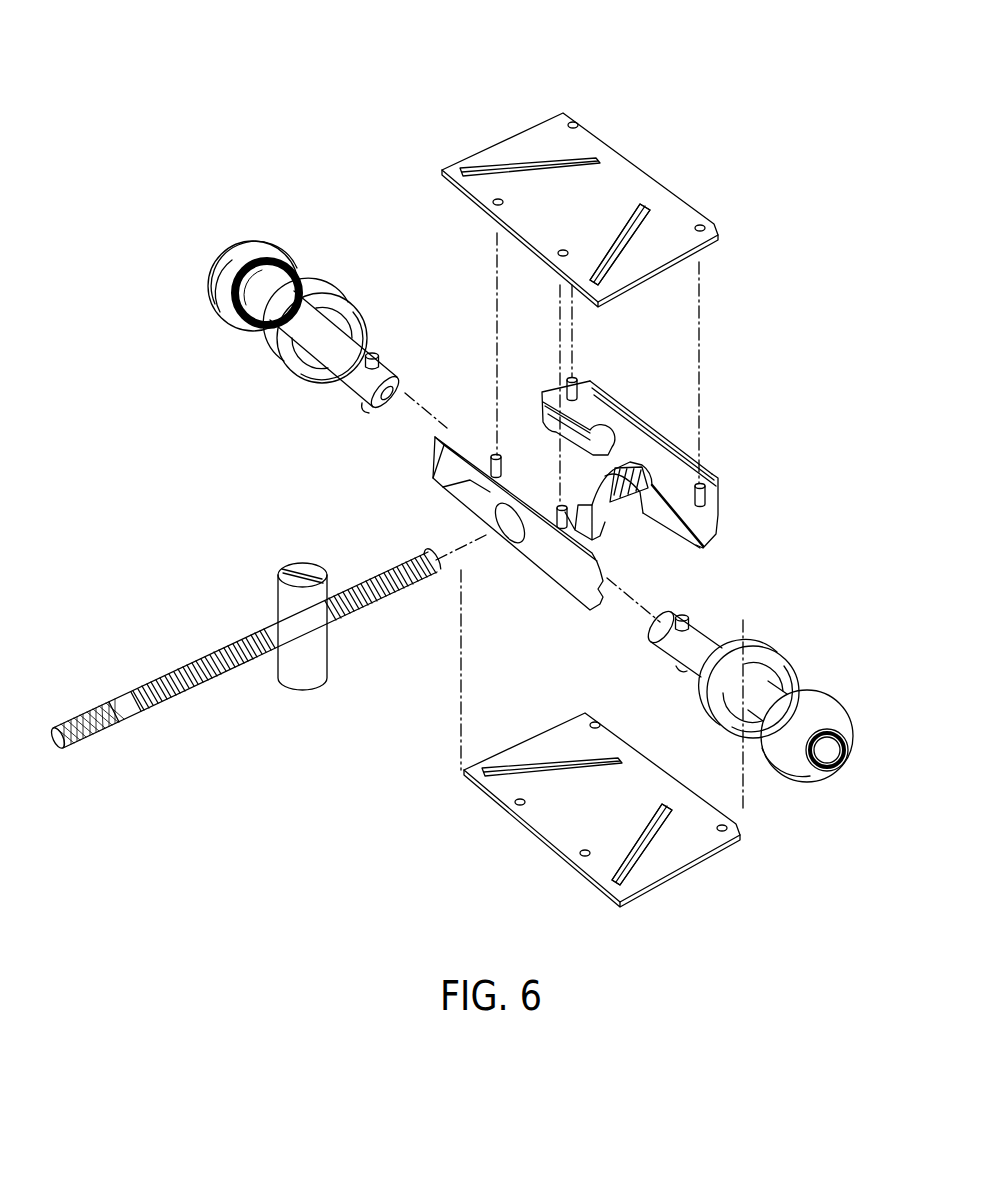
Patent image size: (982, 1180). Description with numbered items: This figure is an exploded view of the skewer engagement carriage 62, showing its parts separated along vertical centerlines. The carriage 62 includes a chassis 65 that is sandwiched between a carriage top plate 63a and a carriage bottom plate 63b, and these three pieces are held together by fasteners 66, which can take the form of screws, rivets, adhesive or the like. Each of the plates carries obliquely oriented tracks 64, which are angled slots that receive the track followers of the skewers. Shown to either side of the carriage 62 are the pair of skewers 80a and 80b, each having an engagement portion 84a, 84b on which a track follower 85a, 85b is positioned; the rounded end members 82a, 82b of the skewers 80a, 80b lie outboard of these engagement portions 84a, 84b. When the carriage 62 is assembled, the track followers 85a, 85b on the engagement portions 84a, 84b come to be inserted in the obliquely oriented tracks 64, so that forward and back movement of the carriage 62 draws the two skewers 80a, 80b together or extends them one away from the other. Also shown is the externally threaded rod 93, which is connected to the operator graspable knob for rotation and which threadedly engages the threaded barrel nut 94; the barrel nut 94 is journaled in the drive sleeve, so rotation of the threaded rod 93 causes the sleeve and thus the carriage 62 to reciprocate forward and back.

The skewer engagement carriage 62 is at (547, 86).
The carriage top plate 63a is at (632, 172).
The carriage bottom plate 63b is at (556, 815).
The obliquely oriented tracks 64 is at (657, 241).
The chassis 65 is at (647, 452).
The fasteners 66 is at (587, 387).
The skewer 80a is at (330, 394).
The skewer 80b is at (742, 614).
The wheel of skewer 82a is at (240, 248).
The wheel of skewer 82b is at (818, 718).
The engagement portion 84a is at (407, 350).
The engagement portion 84b is at (671, 681).
The track follower 85a is at (373, 353).
The track follower 85b is at (690, 615).
The externally threaded rod 93 is at (180, 703).
The threaded barrel nut 94 is at (302, 688).